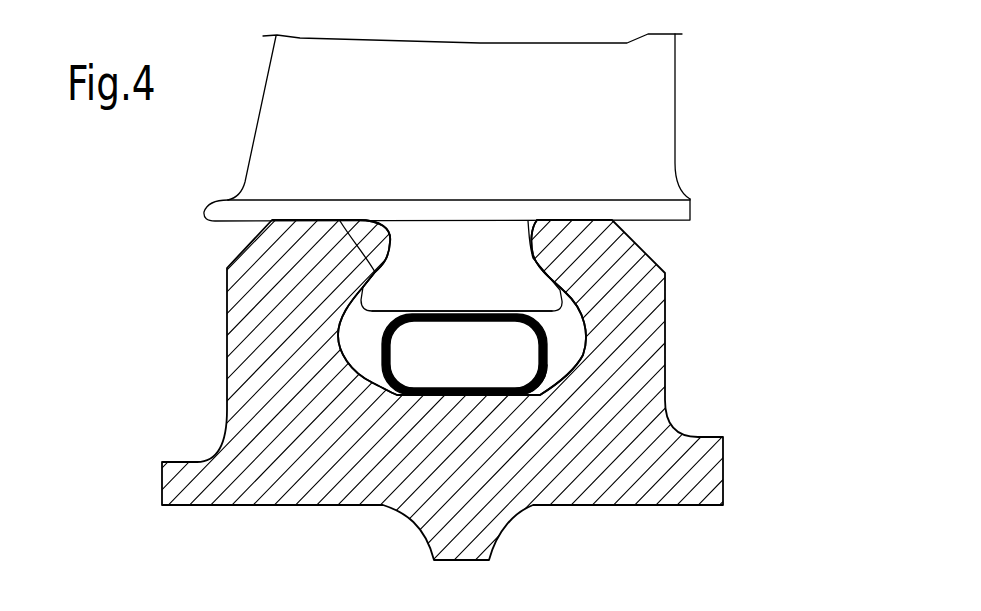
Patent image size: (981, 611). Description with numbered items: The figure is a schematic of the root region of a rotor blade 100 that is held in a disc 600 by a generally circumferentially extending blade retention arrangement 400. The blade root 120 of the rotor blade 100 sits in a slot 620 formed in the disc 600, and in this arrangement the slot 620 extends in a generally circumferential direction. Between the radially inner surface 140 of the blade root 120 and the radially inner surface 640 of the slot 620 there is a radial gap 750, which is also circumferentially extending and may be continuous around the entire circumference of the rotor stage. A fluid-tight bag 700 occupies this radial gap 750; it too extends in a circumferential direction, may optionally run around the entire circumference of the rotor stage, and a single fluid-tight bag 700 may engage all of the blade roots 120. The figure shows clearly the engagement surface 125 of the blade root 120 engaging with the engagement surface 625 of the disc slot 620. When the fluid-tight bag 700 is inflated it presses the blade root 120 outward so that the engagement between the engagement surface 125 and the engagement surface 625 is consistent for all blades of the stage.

The rotor blade 100 is at (742, 57).
The blade root 120 is at (528, 199).
The engagement surface 125 is at (343, 219).
The radially inner surface 140 is at (470, 271).
The blade retention arrangement 400 is at (182, 240).
The disc 600 is at (232, 462).
The slot 620 is at (698, 280).
The engagement surface 625 is at (430, 251).
The radially inner surface 640 is at (577, 445).
The fluid-tight bag 700 is at (358, 434).
The radial gap 750 is at (692, 327).